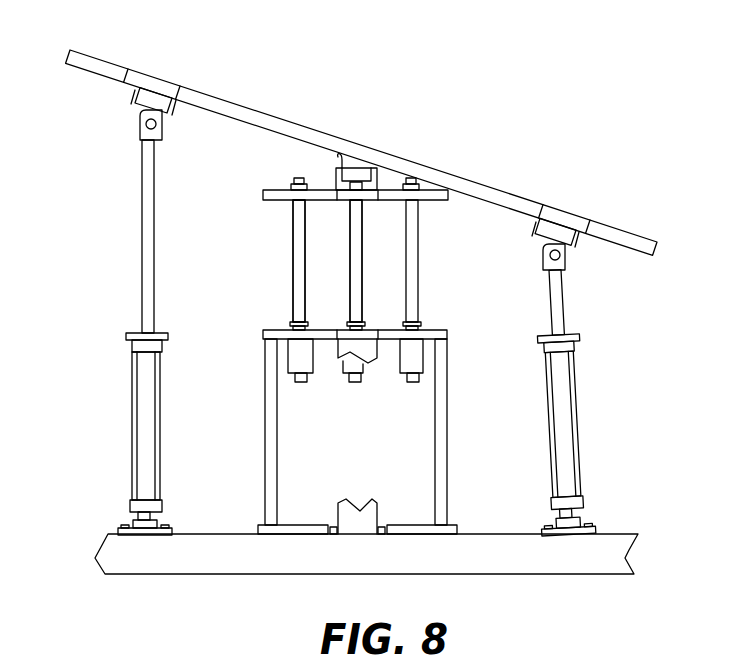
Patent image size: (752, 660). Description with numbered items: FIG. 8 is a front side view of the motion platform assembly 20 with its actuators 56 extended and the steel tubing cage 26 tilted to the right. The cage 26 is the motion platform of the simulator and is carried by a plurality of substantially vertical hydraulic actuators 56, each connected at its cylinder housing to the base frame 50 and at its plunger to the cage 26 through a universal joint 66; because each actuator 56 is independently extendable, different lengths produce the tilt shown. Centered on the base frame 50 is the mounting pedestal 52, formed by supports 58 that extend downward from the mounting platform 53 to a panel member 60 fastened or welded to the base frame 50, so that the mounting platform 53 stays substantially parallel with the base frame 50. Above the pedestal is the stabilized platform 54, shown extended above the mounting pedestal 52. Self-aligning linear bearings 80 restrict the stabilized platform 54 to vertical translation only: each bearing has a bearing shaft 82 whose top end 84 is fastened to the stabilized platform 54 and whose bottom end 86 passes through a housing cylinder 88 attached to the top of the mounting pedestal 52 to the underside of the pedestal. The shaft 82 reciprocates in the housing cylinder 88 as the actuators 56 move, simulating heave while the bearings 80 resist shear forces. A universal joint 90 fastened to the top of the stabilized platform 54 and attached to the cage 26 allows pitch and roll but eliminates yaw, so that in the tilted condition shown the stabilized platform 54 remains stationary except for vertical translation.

The motion platform assembly 20 is at (503, 110).
The steel tubing cage 26 is at (280, 118).
The base frame 50 is at (233, 560).
The mounting pedestal 52 is at (215, 356).
The mounting platform 53 is at (444, 338).
The stabilized platform 54 is at (395, 192).
The actuators 56 is at (145, 417).
The supports 58 is at (266, 403).
The panel member 60 is at (405, 525).
The universal joint 66 is at (140, 123).
The linear bearings 80 is at (289, 293).
The bearing shaft 82 is at (353, 256).
The top end 84 is at (293, 205).
The bottom end 86 is at (362, 366).
The housing cylinder 88 is at (300, 357).
The universal joint 90 is at (355, 178).